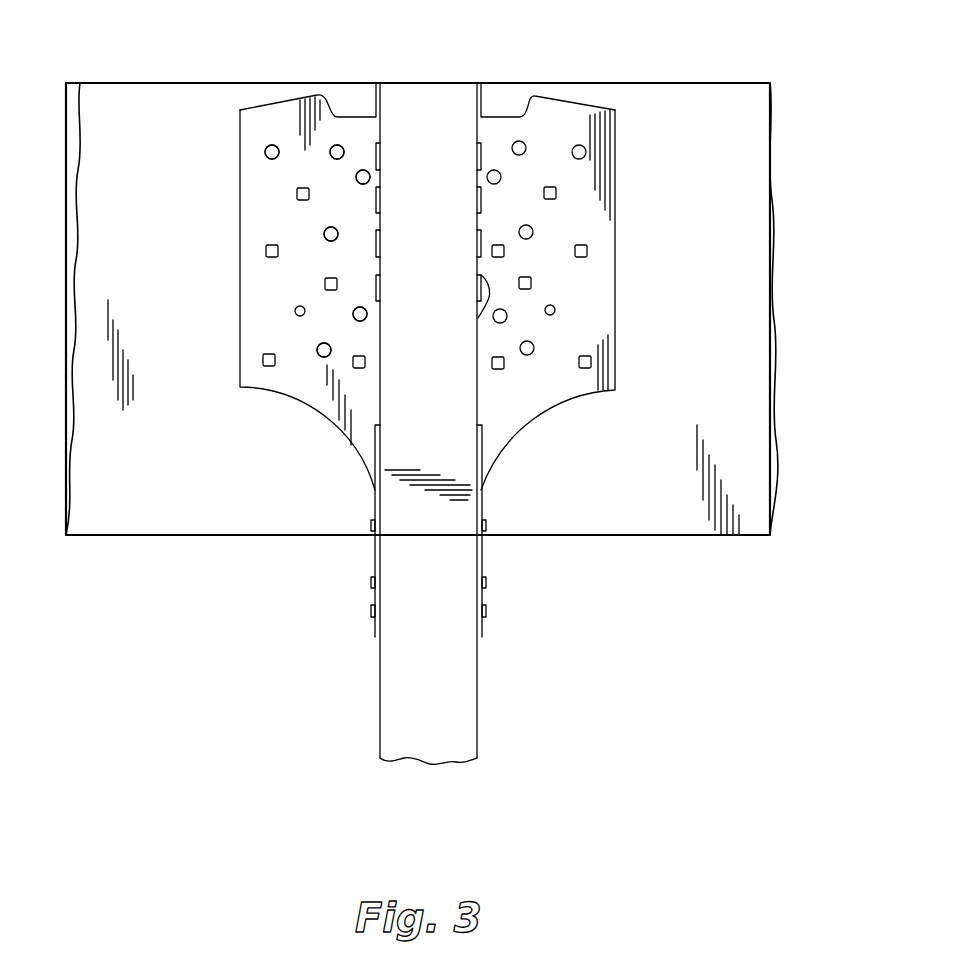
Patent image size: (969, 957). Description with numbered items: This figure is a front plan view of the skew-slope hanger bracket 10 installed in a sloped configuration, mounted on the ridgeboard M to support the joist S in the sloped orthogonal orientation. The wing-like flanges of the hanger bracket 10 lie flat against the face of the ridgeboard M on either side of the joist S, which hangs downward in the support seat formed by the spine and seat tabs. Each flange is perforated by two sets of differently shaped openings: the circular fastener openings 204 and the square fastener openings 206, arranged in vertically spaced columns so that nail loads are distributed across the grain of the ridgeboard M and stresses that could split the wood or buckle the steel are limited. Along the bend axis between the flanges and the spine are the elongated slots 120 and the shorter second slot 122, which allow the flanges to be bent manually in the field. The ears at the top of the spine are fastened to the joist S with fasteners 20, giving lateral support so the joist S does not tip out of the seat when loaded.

The skew-slope hanger bracket 10 is at (532, 388).
The fasteners 20 is at (268, 146).
The elongated slots 120 is at (486, 150).
The second slot 122 is at (486, 302).
The fastener openings 204 is at (336, 145).
The fastener openings 206 is at (296, 193).
The ridgeboard M is at (130, 92).
The joist S is at (466, 739).